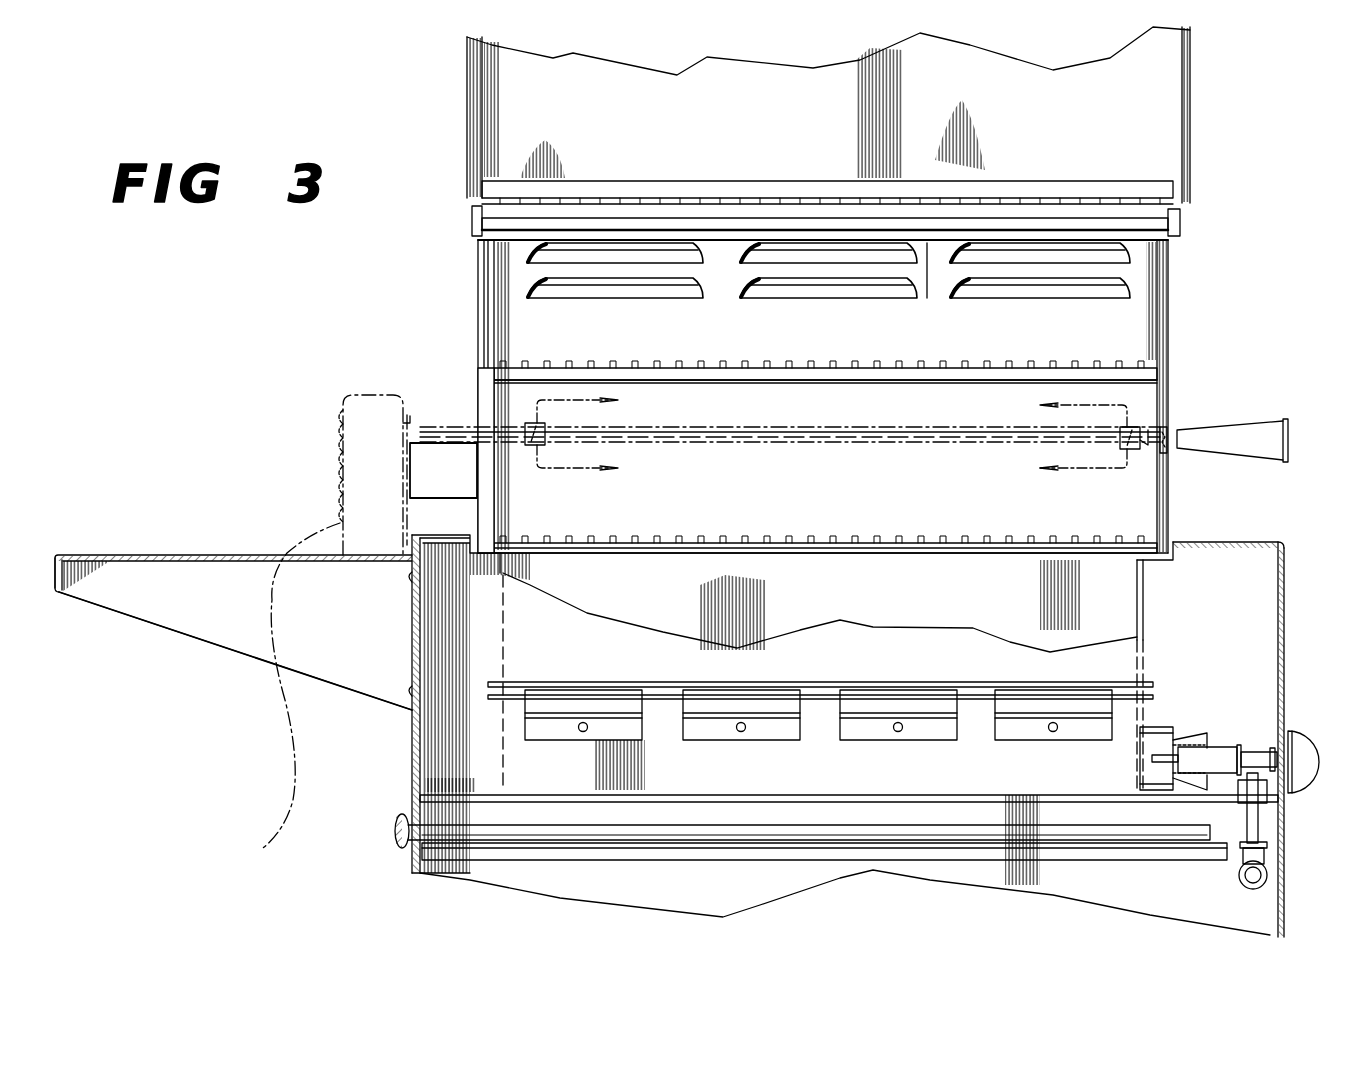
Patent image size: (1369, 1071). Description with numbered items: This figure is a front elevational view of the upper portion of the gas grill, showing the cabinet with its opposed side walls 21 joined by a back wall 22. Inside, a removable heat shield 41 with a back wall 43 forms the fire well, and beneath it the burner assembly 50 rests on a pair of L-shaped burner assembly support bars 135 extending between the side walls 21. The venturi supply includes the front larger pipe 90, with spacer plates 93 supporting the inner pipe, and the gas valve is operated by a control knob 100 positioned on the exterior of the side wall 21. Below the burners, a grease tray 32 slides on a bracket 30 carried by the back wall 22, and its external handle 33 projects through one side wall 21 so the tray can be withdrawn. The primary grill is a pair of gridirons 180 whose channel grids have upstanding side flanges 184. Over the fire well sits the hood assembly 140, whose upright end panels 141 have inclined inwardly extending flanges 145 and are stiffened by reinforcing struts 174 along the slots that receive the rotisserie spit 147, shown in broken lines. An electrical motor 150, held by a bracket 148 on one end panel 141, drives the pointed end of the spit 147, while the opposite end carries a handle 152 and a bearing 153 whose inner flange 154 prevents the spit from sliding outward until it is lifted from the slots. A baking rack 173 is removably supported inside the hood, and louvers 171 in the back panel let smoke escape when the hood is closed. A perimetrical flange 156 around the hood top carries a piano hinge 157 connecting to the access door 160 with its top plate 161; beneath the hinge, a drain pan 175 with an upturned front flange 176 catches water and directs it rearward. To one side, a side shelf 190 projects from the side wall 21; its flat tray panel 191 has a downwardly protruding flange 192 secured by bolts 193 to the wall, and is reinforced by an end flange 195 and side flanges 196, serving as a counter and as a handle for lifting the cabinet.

The side walls 21 is at (412, 750).
The back wall 22 is at (1228, 634).
The grease tray receiving bracket 30 is at (1150, 850).
The grease tray 32 is at (1088, 840).
The external handle 33 is at (395, 828).
The heat shield 41 is at (947, 395).
The back wall of shield 43 is at (705, 390).
The burner assembly 50 is at (1145, 713).
The front larger pipe 90 is at (1160, 740).
The spacer plates 93 is at (1160, 757).
The control knob 100 is at (1300, 760).
The burner assembly support bars 135 is at (1152, 800).
The hood assembly 140 is at (1175, 314).
The end panels 141 is at (483, 333).
The inwardly extending flange 145 is at (486, 475).
The rotisserie spit 147 is at (420, 425).
The bracket 148 is at (438, 455).
The electrical motor 150 is at (348, 405).
The handle 152 is at (1240, 420).
The bearing 153 is at (1172, 432).
The inner flange 154 is at (1152, 462).
The perimetrical flange 156 is at (470, 216).
The piano hinge 157 is at (1012, 203).
The access door 160 is at (462, 84).
The top plate of access door 161 is at (1165, 122).
The louvers 171 is at (612, 278).
The baking rack 173 is at (800, 372).
The reinforcing struts 174 is at (487, 290).
The drain pan 175 is at (926, 248).
The front flange 176 is at (715, 218).
The gridirons 180 is at (742, 535).
The side flanges 184 is at (1020, 540).
The side shelf 190 is at (160, 553).
The tray panel 191 is at (243, 555).
The downwardly protruding flange 192 is at (410, 640).
The bolts 193 is at (406, 580).
The end flange 195 is at (52, 588).
The side flanges 196 is at (208, 630).